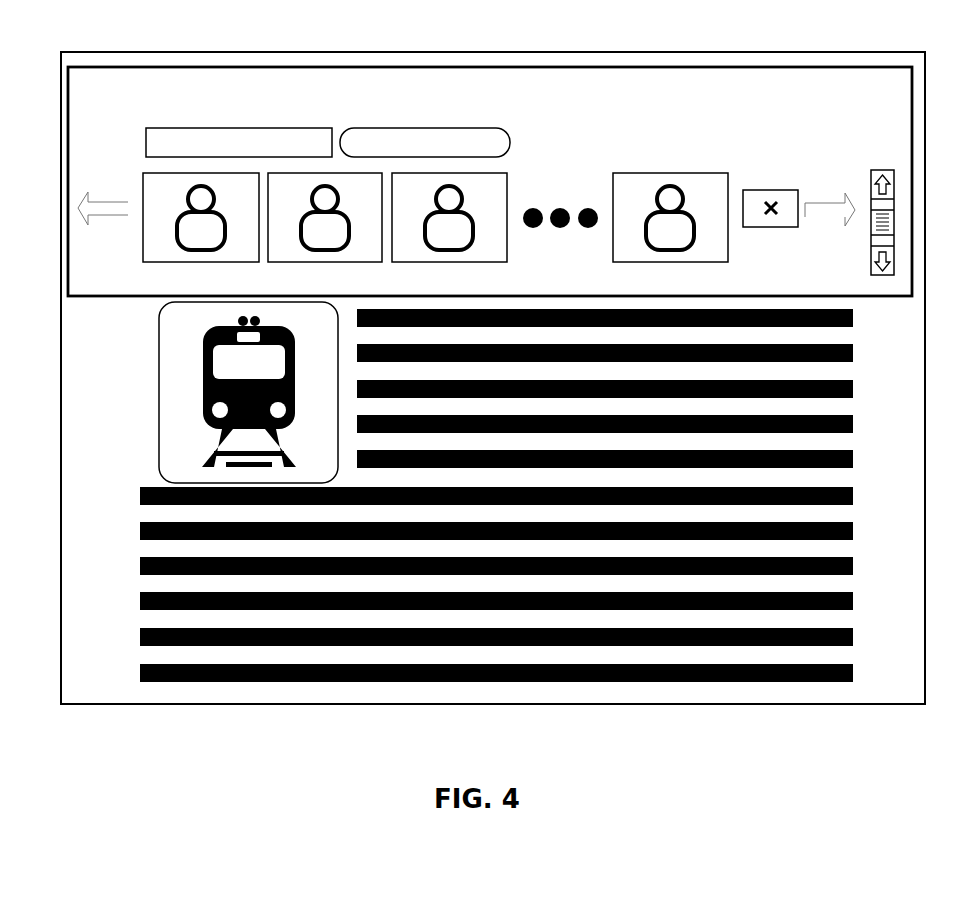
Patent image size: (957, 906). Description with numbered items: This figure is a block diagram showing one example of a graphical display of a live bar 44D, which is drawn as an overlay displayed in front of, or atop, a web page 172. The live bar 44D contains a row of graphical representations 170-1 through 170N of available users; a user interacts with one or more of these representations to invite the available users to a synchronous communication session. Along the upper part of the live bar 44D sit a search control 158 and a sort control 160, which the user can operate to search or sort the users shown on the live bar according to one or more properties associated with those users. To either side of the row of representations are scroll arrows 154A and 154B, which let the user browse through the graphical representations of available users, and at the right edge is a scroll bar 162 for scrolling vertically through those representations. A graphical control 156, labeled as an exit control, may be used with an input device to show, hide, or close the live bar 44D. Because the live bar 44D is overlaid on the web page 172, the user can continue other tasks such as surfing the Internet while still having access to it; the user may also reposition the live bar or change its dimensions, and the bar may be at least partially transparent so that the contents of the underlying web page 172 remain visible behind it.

The live bar 44D is at (614, 92).
The scroll arrow 154A is at (92, 221).
The scroll arrow 154B is at (833, 220).
The graphical control 156 is at (781, 185).
The search control 158 is at (236, 121).
The sort control 160 is at (428, 123).
The scroll bar 162 is at (884, 160).
The graphical representation 170-1 is at (241, 263).
The graphical representation 170N is at (700, 263).
The web page 172 is at (360, 686).